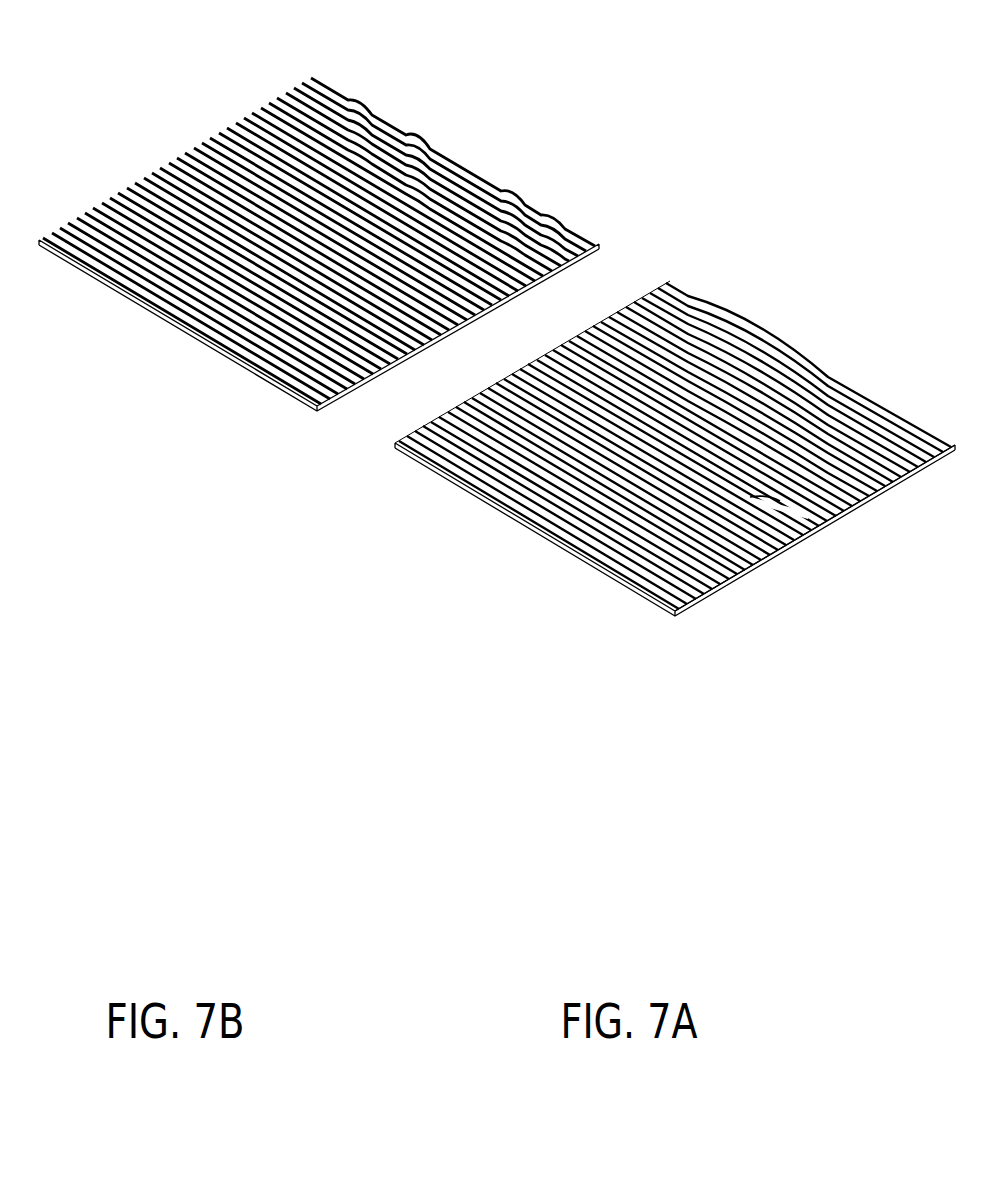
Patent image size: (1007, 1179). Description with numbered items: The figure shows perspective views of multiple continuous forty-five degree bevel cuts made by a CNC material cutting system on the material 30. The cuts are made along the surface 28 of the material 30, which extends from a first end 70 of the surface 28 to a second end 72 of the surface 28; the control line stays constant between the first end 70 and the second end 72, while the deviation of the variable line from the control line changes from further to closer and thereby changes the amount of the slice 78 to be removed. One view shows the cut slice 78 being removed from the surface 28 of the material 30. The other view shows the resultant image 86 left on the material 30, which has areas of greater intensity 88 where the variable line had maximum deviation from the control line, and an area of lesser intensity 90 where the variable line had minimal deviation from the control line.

In FIG. 7B, the surface 28 is at (353, 94).
In FIG. 7A, the surface 28 is at (683, 288).
In FIG. 7B, the material 30 is at (215, 347).
In FIG. 7A, the material 30 is at (582, 557).
In FIG. 7A, the first end 70 is at (797, 527).
In FIG. 7A, the second end 72 is at (508, 364).
In FIG. 7A, the slice 78 is at (848, 495).
In FIG. 7B, the resultant image 86 is at (410, 128).
In FIG. 7B, the areas of greater intensity 88 is at (503, 181).
In FIG. 7B, the area of lesser intensity 90 is at (543, 204).